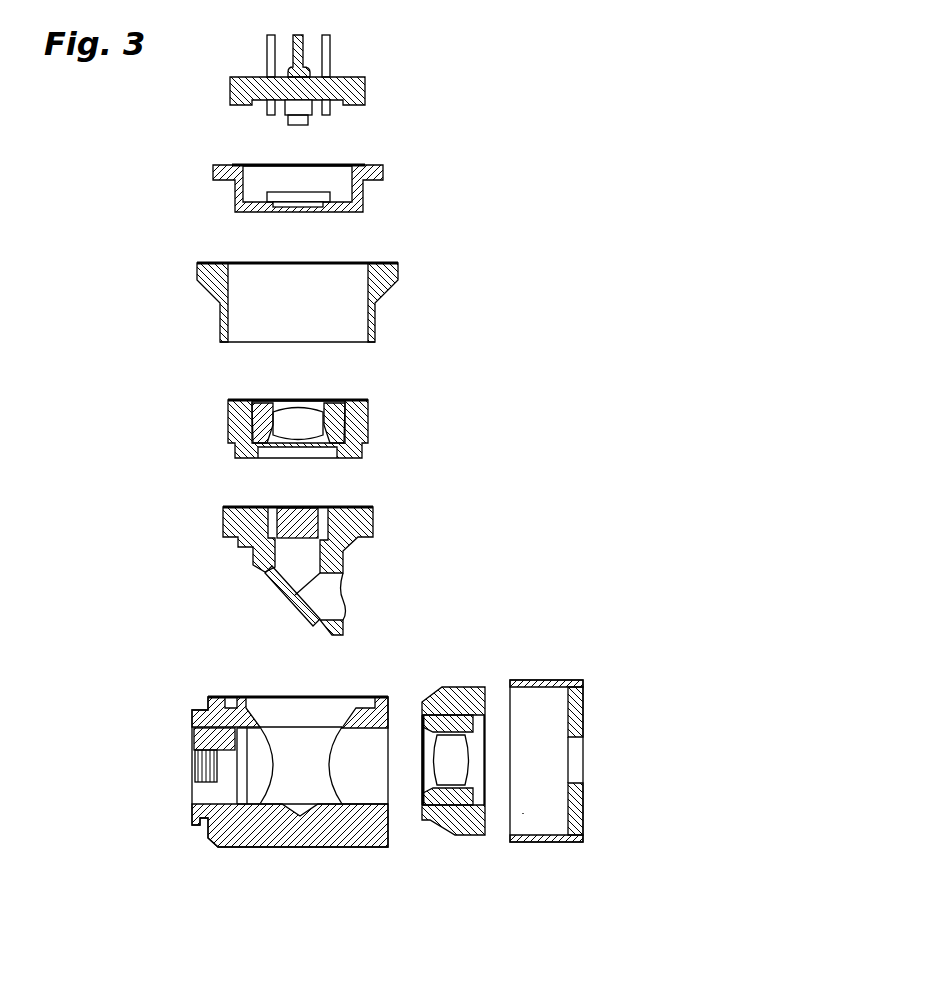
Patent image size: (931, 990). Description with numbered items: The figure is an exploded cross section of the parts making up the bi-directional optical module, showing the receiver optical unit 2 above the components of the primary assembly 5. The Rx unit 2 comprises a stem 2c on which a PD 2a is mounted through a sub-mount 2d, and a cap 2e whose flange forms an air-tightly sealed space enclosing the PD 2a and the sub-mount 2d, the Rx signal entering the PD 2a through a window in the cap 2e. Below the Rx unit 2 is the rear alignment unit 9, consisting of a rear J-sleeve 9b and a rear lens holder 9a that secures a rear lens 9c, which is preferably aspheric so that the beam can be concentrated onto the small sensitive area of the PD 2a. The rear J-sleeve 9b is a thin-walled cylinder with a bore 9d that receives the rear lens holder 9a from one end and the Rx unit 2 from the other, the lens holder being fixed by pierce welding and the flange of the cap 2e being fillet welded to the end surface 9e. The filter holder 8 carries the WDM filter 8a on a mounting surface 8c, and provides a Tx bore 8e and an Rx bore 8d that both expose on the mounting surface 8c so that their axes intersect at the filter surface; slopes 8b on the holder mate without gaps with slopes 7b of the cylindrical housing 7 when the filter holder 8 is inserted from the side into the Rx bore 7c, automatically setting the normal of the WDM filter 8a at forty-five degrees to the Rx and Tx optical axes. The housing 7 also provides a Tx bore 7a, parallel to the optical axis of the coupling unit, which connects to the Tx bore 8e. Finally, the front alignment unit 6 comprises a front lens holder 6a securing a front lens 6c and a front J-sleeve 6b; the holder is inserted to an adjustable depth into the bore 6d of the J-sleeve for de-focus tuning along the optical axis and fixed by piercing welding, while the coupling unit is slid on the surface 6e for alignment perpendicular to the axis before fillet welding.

The receiver optical unit 2 is at (400, 75).
The PD 2a is at (306, 124).
The stem 2c is at (357, 77).
The sub-mount 2d is at (285, 108).
The cap 2e is at (368, 163).
The primary assembly 5 is at (170, 263).
The front alignment unit 6 is at (583, 892).
The front lens holder 6a is at (453, 757).
The front J-sleeve 6b is at (553, 754).
The front lens 6c is at (450, 782).
The bore 6d is at (523, 813).
The surface 6e is at (585, 823).
The housing 7 is at (388, 697).
The Tx bore 7a is at (388, 790).
The slopes 7b is at (250, 716).
The Rx bore 7c is at (302, 708).
The filter holder 8 is at (365, 506).
The WDM filter 8a is at (283, 590).
The slopes 8b is at (238, 549).
The mounting surface 8c is at (325, 623).
The Rx bore 8d is at (292, 560).
The Tx bore 8e is at (327, 597).
The rear alignment unit 9 is at (452, 263).
The rear lens holder 9a is at (307, 409).
The rear J-sleeve 9b is at (385, 293).
The rear lens 9c is at (297, 413).
The bore 9d is at (243, 332).
The end surface 9e is at (315, 310).